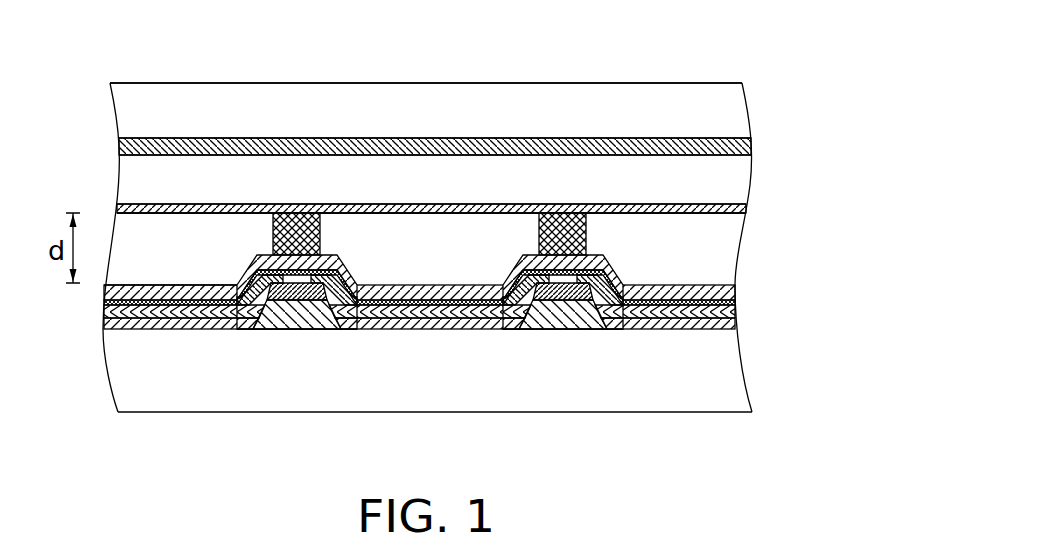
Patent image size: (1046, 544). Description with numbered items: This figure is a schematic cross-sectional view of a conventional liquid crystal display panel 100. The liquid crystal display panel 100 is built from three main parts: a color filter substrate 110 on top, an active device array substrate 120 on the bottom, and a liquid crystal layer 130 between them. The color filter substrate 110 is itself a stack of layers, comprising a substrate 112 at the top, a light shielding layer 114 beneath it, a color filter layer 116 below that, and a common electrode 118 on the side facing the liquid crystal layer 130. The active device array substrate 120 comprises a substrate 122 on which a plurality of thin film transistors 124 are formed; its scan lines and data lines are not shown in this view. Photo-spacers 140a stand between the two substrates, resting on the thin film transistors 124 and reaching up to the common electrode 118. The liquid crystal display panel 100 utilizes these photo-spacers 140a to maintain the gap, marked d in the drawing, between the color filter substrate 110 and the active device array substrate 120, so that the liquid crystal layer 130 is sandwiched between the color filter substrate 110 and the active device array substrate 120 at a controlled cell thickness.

The liquid crystal display panel 100 is at (762, 510).
The color filter substrate 110 is at (833, 78).
The substrate 112 is at (733, 110).
The light shielding layer 114 is at (741, 144).
The color filter layer 116 is at (735, 180).
The common electrode 118 is at (744, 209).
The active device array substrate 120 is at (790, 283).
The substrate 122 is at (632, 387).
The thin film transistor 124 is at (358, 337).
The liquid crystal layer 130 is at (728, 250).
The photo-spacer 140a is at (290, 231).